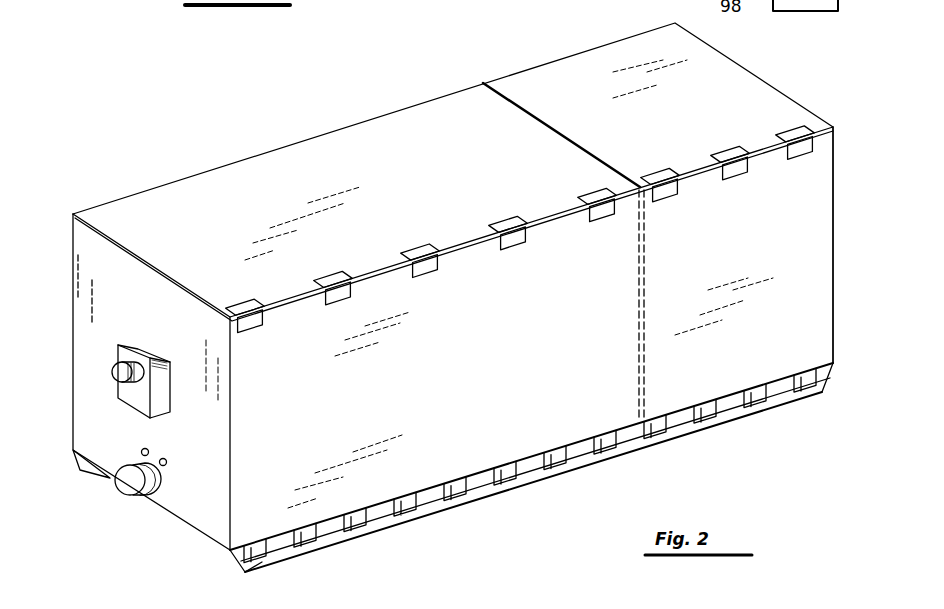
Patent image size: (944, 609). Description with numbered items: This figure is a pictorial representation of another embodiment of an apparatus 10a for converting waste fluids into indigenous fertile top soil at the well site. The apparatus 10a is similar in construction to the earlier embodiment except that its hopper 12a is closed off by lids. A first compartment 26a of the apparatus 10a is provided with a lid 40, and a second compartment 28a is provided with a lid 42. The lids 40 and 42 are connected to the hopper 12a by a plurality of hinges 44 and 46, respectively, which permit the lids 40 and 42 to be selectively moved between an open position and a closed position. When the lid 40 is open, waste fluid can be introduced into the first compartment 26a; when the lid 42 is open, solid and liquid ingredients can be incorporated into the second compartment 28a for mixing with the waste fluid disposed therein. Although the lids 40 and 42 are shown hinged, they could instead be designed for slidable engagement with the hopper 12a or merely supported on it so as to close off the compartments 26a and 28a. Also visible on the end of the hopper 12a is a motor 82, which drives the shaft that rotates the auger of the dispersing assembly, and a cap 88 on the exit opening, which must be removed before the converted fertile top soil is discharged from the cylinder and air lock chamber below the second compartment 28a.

The apparatus 10a is at (423, 62).
The hopper 12a is at (70, 282).
The first compartment 26a is at (807, 210).
The second compartment 28a is at (255, 478).
The lid 40 is at (755, 82).
The lid 42 is at (267, 168).
The hinges 44 is at (742, 145).
The hinges 46 is at (332, 275).
The motor 82 is at (113, 373).
The cap 88 is at (112, 488).